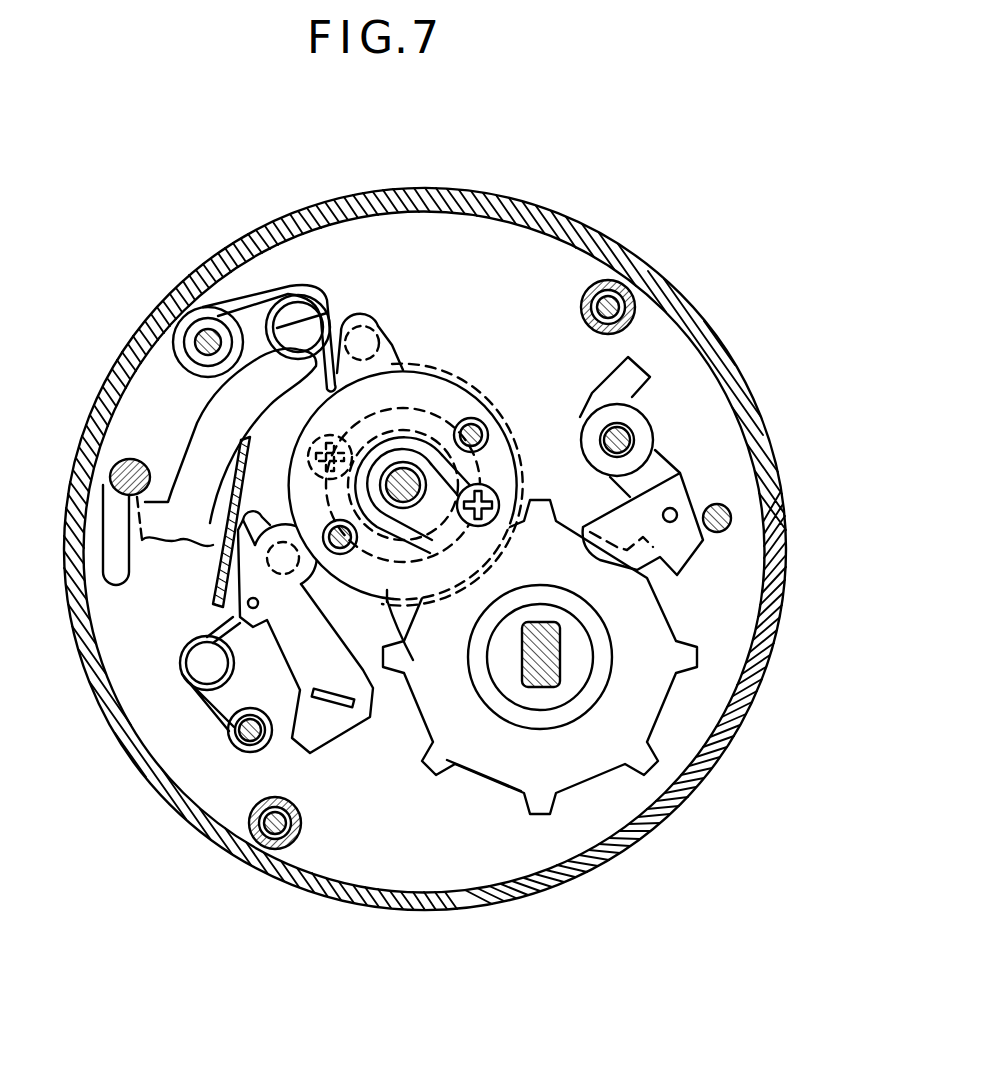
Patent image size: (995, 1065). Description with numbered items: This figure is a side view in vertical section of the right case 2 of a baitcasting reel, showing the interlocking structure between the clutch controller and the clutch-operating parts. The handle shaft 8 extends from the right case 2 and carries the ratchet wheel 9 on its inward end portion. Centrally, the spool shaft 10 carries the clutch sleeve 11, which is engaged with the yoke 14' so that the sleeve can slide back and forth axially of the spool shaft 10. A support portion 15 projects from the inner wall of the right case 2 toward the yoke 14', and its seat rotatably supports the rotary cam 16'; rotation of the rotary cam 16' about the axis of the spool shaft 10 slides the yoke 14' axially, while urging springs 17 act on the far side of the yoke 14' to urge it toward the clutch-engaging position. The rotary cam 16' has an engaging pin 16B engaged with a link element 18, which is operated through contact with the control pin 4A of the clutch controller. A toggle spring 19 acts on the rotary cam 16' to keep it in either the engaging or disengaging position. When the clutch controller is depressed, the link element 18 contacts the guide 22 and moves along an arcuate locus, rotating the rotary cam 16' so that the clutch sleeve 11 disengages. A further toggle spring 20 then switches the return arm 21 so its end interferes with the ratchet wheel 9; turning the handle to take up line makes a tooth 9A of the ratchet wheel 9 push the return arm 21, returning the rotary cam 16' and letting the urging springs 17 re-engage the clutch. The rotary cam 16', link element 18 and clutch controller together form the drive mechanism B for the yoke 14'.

The right case 2 is at (540, 205).
The drive mechanism B is at (335, 276).
The toggle spring 19 is at (262, 300).
The engaging pin 16B is at (370, 330).
The yoke 14' is at (403, 453).
The support portion 15 is at (447, 374).
The urging springs 17 is at (489, 434).
The control pin 4A is at (123, 460).
The link element 18 is at (207, 412).
The clutch sleeve 11 is at (420, 498).
The guide 22 is at (207, 573).
The spool shaft 10 is at (404, 495).
The further toggle spring 20 is at (187, 643).
The rotary cam 16' is at (423, 644).
The return arm 21 is at (350, 723).
The tooth 9A is at (447, 760).
The handle shaft 8 is at (557, 670).
The ratchet wheel 9 is at (575, 758).